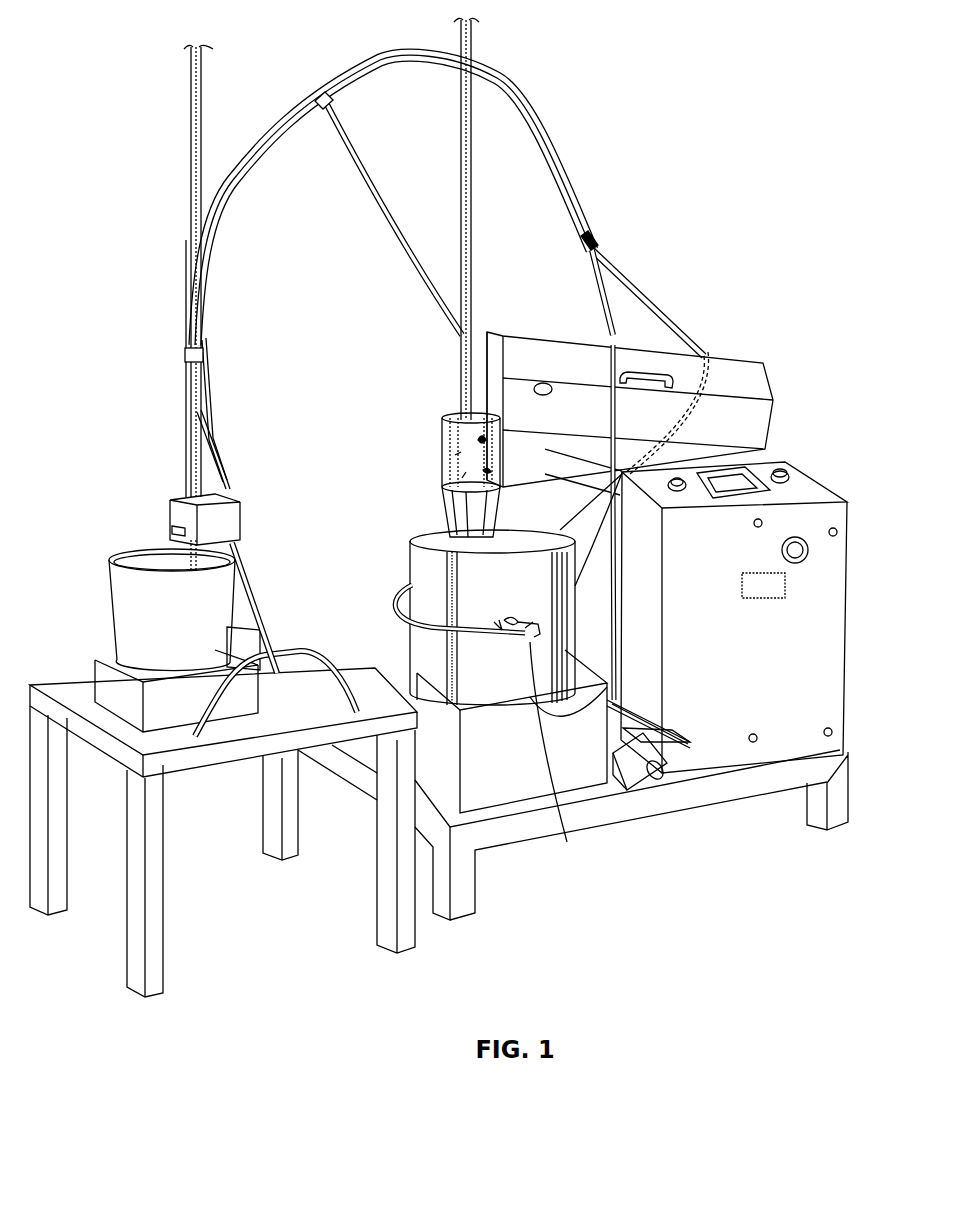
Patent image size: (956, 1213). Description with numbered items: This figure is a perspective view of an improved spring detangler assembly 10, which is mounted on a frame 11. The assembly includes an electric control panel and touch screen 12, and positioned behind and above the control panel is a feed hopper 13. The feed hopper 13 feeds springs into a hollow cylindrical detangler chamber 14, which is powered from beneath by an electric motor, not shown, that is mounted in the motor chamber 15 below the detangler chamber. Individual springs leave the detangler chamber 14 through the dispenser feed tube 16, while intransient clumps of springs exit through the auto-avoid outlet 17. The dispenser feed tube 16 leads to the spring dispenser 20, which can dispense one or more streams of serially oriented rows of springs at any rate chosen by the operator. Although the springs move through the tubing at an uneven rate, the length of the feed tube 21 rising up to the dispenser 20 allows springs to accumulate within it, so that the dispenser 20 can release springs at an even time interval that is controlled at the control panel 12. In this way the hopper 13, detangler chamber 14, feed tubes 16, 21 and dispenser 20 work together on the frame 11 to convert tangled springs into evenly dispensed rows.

The spring detangler assembly 10 is at (674, 124).
The frame 11 is at (832, 828).
The electric control panel and touch screen 12 is at (806, 478).
The feed hopper 13 is at (733, 352).
The detangler chamber 14 is at (418, 562).
The motor chamber 15 is at (575, 767).
The dispenser feed tube 16 is at (568, 757).
The auto-avoid outlet 17 is at (627, 730).
The spring dispenser 20 is at (167, 513).
The feed tube 21 is at (354, 70).